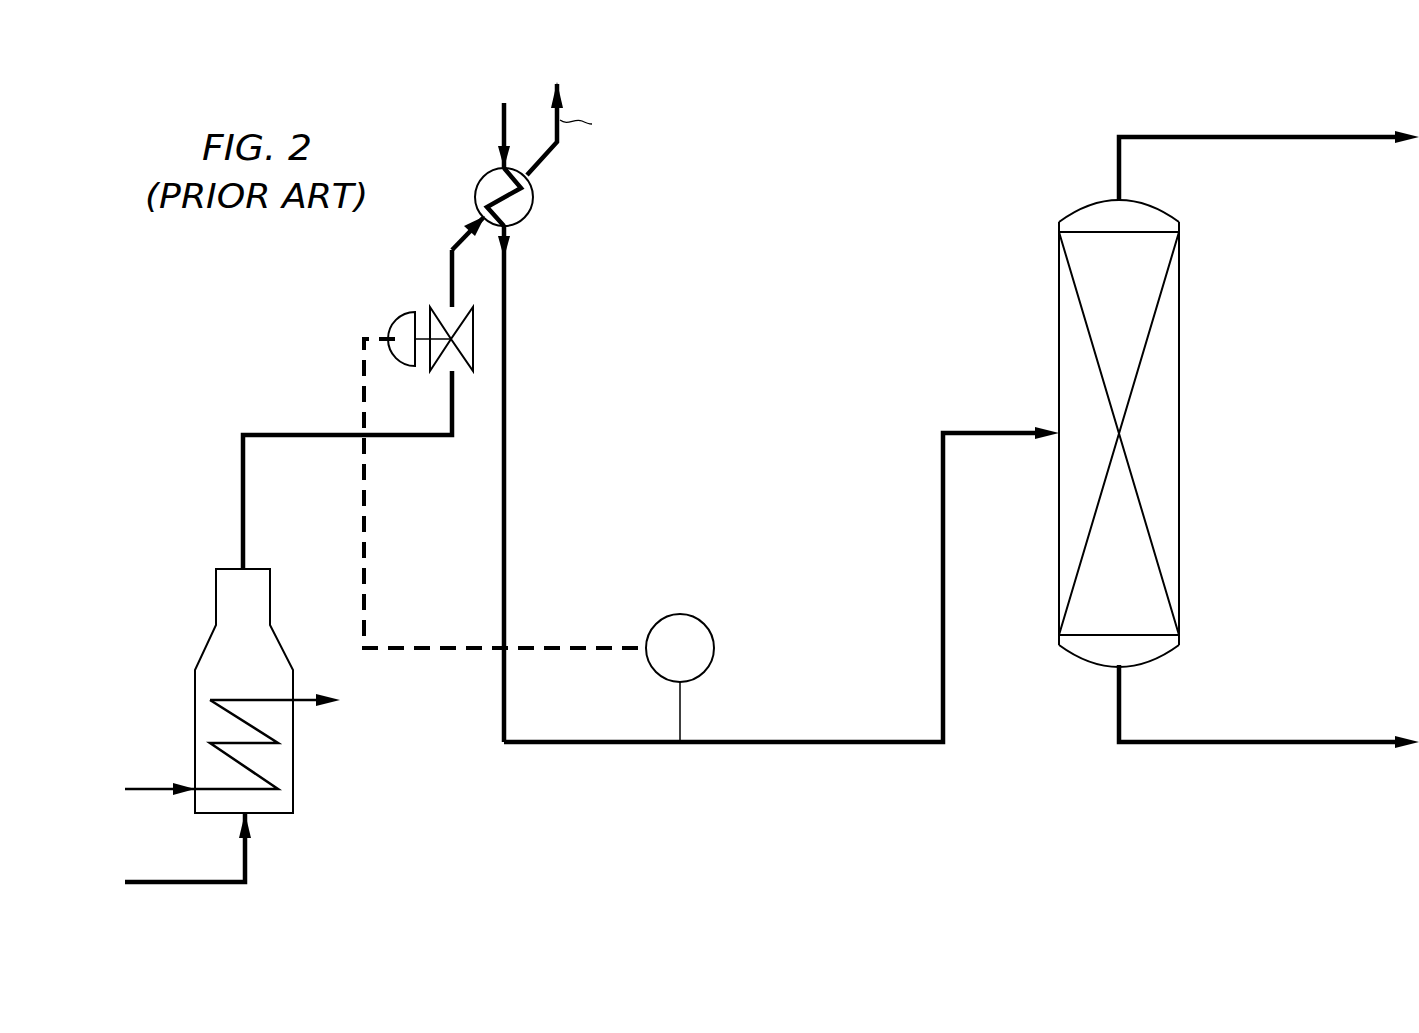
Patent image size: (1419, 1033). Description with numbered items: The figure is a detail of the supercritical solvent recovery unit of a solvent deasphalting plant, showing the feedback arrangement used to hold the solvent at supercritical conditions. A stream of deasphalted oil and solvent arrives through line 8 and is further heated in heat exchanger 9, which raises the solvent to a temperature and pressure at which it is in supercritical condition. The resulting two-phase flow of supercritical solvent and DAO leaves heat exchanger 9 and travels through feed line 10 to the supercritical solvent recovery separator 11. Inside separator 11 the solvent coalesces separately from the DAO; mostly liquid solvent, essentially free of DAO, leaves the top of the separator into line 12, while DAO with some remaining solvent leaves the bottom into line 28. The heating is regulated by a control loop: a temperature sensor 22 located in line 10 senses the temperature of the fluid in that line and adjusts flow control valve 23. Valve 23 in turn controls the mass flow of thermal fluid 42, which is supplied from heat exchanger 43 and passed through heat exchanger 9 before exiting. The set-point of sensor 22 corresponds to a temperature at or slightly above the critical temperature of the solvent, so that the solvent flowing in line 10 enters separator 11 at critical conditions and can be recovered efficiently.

The line 8 is at (502, 129).
The heat exchanger 9 is at (533, 190).
The feed line 10 is at (943, 527).
The supercritical solvent recovery separator 11 is at (1180, 385).
The line 12 is at (1175, 136).
The temperature sensor 22 is at (714, 648).
The flow control valve 23 is at (406, 316).
The line 28 is at (1175, 741).
The thermal fluid 42 is at (170, 882).
The heat exchanger 43 is at (294, 757).